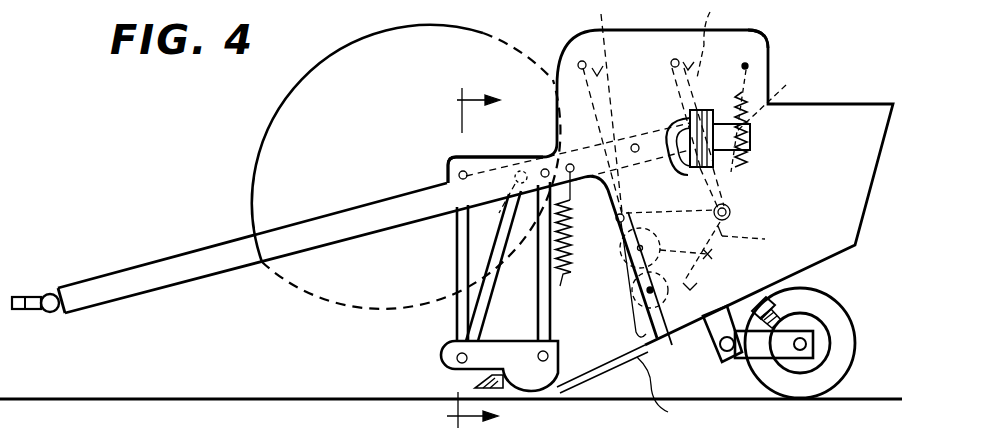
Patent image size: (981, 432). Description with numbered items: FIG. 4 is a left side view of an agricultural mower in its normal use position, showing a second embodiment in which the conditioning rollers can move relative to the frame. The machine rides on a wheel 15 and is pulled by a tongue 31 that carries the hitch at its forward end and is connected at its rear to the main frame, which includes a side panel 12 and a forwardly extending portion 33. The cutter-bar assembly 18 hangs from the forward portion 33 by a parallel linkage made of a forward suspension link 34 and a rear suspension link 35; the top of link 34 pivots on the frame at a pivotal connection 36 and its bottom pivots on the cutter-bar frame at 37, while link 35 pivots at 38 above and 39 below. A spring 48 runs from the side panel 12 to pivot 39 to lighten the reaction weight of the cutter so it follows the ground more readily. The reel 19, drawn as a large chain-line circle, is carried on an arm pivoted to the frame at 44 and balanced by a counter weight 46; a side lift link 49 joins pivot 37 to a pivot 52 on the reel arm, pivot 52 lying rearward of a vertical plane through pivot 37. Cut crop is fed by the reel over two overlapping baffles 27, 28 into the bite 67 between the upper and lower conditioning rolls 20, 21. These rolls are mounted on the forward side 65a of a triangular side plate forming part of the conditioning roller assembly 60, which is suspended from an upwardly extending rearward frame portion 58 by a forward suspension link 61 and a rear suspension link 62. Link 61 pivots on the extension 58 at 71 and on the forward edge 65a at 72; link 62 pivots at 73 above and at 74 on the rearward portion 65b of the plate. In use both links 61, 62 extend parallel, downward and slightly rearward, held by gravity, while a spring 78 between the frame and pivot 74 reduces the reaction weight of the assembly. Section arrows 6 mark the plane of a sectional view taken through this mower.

The section line 6- 6 is at (483, 260).
The side panel 12 is at (673, 187).
The wheel 15 is at (846, 313).
The cutter-bar assembly 18 is at (432, 342).
The reel 19 is at (266, 125).
The conditioning roll 20 is at (702, 258).
The conditioning roll 21 is at (704, 260).
The baffle 27 is at (592, 372).
The baffle 28 is at (666, 392).
The tongue 31 is at (76, 285).
The forwardly extending portion of the main frame 33 is at (458, 175).
The forward suspension link 34 is at (455, 248).
The rear suspension link 35 is at (517, 295).
The pivotal connection 36 is at (452, 160).
The pivotal connection 37 is at (456, 358).
The pivotal connection 38 is at (546, 167).
The pivotal connection 39 is at (582, 300).
The pivotal connection 44 is at (635, 144).
The counter weight 46 is at (702, 112).
The spring 48 is at (572, 266).
The side lift link 49 is at (488, 294).
The pivot 52 is at (518, 170).
The upwardly extending rearward portion of the main frame 58 is at (743, 43).
The conditioning roller assembly 60 is at (750, 190).
The forward suspension link 61 is at (596, 106).
The rear suspension link 62 is at (719, 39).
The forwardly located side of side plate 65a is at (640, 356).
The rearward portion of side plate 65b is at (763, 240).
The inlet or bite 67 is at (624, 280).
The pivotal connection 71 is at (580, 58).
The pivotal connection 72 is at (623, 213).
The pivotal connection 73 is at (678, 54).
The pivotal connection 74 is at (735, 212).
The spring 78 is at (797, 78).